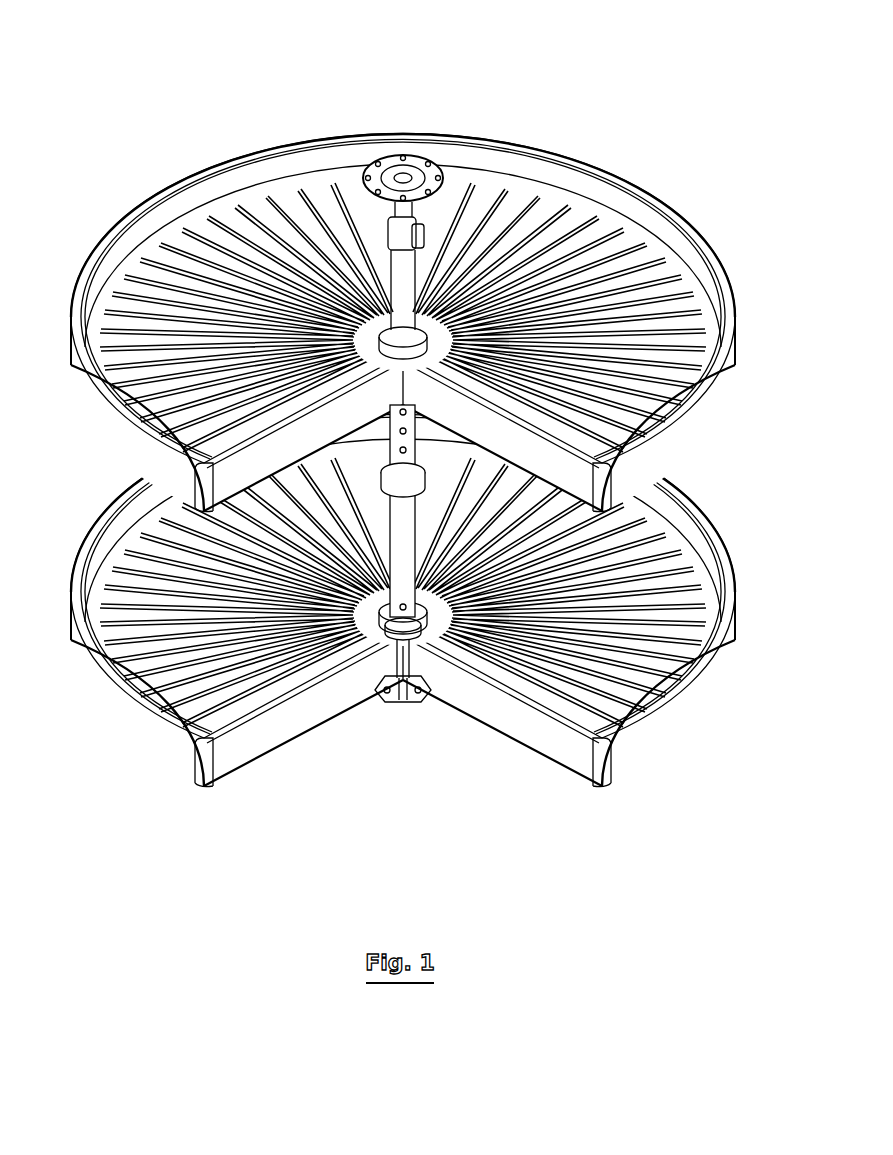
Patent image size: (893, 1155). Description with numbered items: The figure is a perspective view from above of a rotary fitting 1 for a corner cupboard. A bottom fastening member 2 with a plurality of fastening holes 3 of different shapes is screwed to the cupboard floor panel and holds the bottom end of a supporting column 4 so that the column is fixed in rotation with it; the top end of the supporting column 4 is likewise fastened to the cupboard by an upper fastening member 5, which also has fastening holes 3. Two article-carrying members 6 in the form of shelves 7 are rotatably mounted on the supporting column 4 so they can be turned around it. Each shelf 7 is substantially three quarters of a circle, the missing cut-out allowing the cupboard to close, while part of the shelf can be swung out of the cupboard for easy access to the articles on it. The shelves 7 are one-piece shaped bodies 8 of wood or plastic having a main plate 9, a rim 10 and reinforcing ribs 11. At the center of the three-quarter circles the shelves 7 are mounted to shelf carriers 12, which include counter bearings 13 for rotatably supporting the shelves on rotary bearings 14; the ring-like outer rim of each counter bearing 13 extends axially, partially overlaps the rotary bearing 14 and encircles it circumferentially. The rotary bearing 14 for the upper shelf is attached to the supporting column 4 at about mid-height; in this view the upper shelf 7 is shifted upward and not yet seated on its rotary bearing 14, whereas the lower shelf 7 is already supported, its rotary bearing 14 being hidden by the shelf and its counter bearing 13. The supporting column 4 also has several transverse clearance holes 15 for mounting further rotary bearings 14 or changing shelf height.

The rotary fitting 1 is at (403, 445).
The bottom fastening member 2 is at (393, 697).
The fastening holes 3 is at (400, 430).
The supporting column 4 is at (380, 640).
The upper fastening member 5 is at (407, 157).
The article-carrying members 6 is at (403, 470).
The shelves 7 is at (403, 470).
The one-piece shaped bodies 8 is at (598, 187).
The main plate 9 is at (480, 195).
The rim 10 is at (513, 165).
The reinforcing ribs 11 is at (533, 197).
The shelf carriers 12 is at (392, 430).
The counter bearings 13 is at (390, 225).
The rotary bearings 14 is at (333, 670).
The transverse clearance holes 15 is at (408, 685).